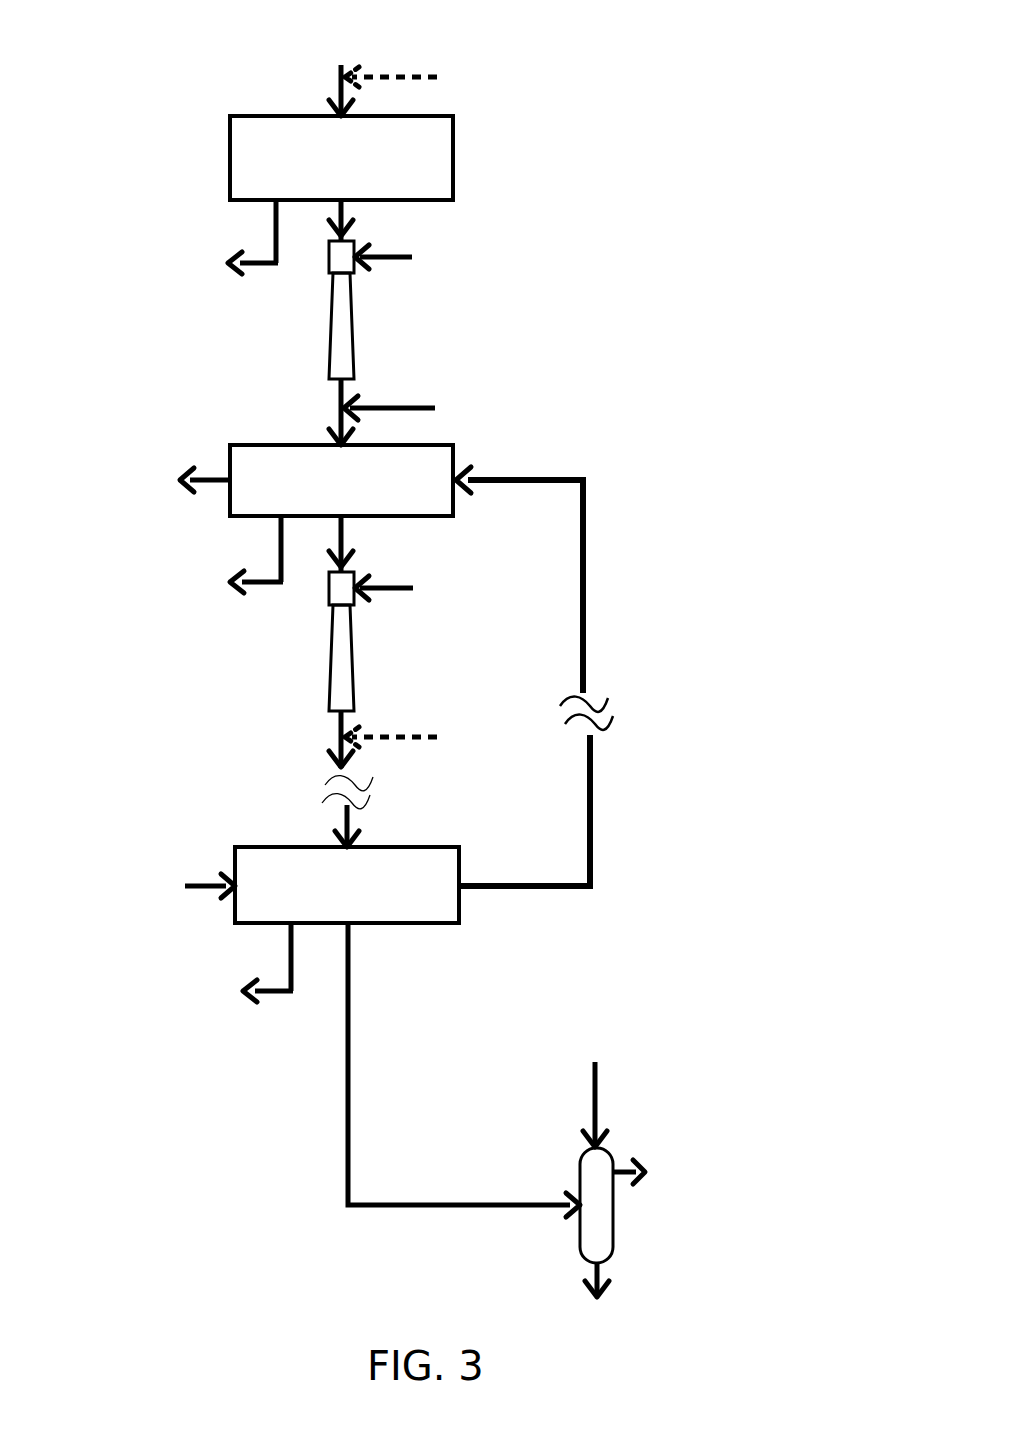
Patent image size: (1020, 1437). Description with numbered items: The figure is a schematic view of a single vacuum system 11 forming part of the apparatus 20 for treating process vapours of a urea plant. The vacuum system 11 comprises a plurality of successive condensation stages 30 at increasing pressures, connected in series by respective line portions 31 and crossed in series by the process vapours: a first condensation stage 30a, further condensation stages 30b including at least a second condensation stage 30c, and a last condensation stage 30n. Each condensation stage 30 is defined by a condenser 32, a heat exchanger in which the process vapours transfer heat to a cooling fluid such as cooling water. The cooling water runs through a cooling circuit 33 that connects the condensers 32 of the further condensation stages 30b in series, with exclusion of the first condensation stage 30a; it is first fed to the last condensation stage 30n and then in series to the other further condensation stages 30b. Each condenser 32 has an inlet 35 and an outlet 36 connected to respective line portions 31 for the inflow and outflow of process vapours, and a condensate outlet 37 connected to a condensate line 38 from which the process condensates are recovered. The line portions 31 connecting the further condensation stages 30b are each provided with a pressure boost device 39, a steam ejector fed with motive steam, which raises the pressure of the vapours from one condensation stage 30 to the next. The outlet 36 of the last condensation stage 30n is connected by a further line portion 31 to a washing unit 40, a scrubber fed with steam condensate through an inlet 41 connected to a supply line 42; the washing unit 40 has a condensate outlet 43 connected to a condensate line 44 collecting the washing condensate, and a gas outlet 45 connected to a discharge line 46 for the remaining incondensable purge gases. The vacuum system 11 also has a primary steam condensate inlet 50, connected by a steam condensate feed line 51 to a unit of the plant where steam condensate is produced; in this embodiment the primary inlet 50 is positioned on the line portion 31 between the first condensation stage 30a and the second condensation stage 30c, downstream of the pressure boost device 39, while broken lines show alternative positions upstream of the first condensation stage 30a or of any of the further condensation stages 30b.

The vacuum system 11 is at (612, 403).
The apparatus 20 is at (650, 212).
The condensation stage 30 is at (245, 145).
The first condensation stage 30a is at (438, 143).
The further condensation stage 30b is at (238, 453).
The second condensation stage 30c is at (435, 511).
The last condensation stage 30n is at (440, 852).
The line portion 31 is at (338, 85).
The condenser 32 is at (453, 168).
The cooling circuit 33 is at (620, 858).
The inlet 35 is at (341, 117).
The outlet 36 is at (343, 192).
The condensate outlet 37 is at (277, 203).
The condensate line 38 is at (273, 240).
The pressure boost device 39 is at (343, 312).
The washing unit 40 is at (597, 1173).
The inlet 41 is at (602, 1147).
The supply line 42 is at (597, 1085).
The condensate outlet 43 is at (597, 1270).
The condensate line 44 is at (593, 1265).
The gas outlet 45 is at (613, 1180).
The discharge line 46 is at (637, 1157).
The primary steam condensate inlet 50 is at (338, 78).
The steam condensate feed line 51 is at (432, 78).